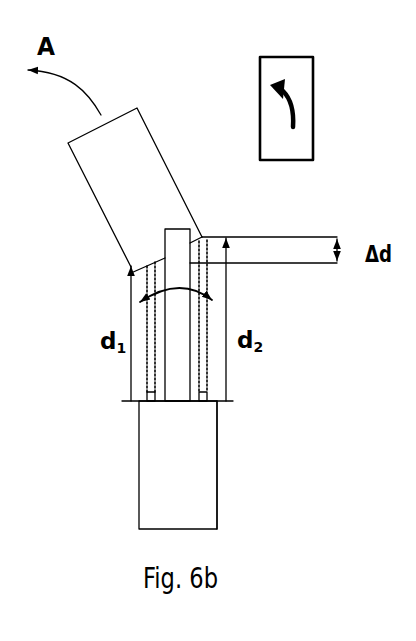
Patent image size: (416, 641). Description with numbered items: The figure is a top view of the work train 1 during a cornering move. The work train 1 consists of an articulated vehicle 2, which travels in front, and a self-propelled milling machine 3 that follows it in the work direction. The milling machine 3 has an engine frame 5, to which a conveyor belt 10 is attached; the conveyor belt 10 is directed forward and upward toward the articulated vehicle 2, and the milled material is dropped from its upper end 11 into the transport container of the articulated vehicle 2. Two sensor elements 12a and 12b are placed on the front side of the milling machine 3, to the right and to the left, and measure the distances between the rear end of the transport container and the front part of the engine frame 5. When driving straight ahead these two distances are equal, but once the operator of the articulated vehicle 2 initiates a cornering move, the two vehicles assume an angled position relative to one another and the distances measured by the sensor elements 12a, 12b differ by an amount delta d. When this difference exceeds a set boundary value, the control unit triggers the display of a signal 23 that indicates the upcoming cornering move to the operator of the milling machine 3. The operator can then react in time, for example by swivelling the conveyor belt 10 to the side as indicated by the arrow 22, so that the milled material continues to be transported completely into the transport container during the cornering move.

The work train 1 is at (73, 240).
The articulated vehicle 2 is at (157, 140).
The milling machine 3 is at (131, 502).
The engine frame 5 is at (218, 470).
The conveyor belt 10 is at (180, 340).
The upper end 11 is at (178, 229).
The sensor element 12a is at (153, 391).
The sensor element 12b is at (203, 393).
The arrow 22 is at (213, 298).
The signal 23 is at (297, 80).